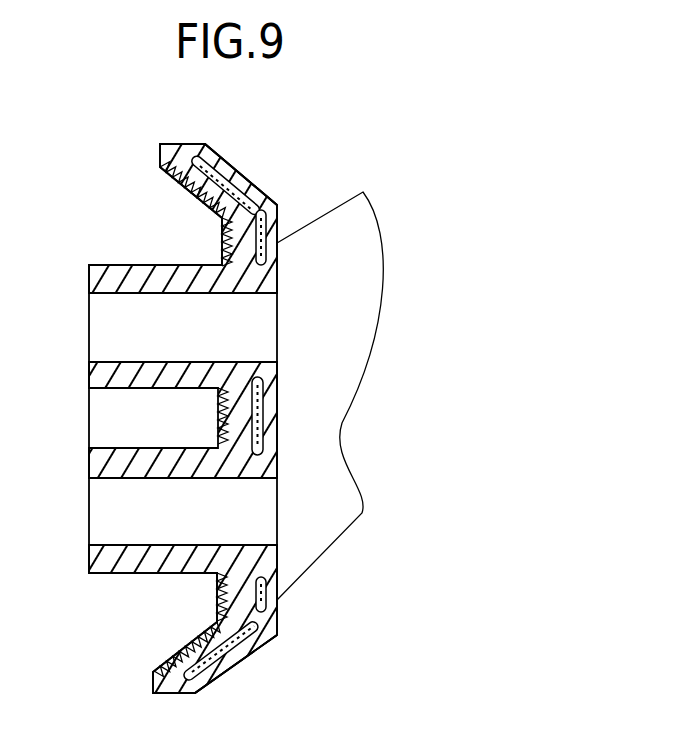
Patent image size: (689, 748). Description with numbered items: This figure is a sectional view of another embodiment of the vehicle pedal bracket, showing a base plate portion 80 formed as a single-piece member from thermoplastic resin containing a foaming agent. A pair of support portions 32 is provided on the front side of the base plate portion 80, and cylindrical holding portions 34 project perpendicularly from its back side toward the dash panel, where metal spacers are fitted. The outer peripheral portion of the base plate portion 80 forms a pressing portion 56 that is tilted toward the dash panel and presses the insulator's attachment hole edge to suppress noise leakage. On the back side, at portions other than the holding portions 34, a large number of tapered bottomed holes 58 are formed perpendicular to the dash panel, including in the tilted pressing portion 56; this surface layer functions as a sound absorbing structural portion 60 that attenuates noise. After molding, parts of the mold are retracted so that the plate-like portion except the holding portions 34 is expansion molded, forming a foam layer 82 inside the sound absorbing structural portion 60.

The support portions 32 is at (360, 300).
The holding portions 34 is at (110, 282).
The pressing portion 56 is at (230, 168).
The bottomed holes 58 is at (193, 190).
The sound absorbing structural portion 60 is at (137, 165).
The base plate portion 80 is at (282, 145).
The foam layer 82 is at (266, 192).